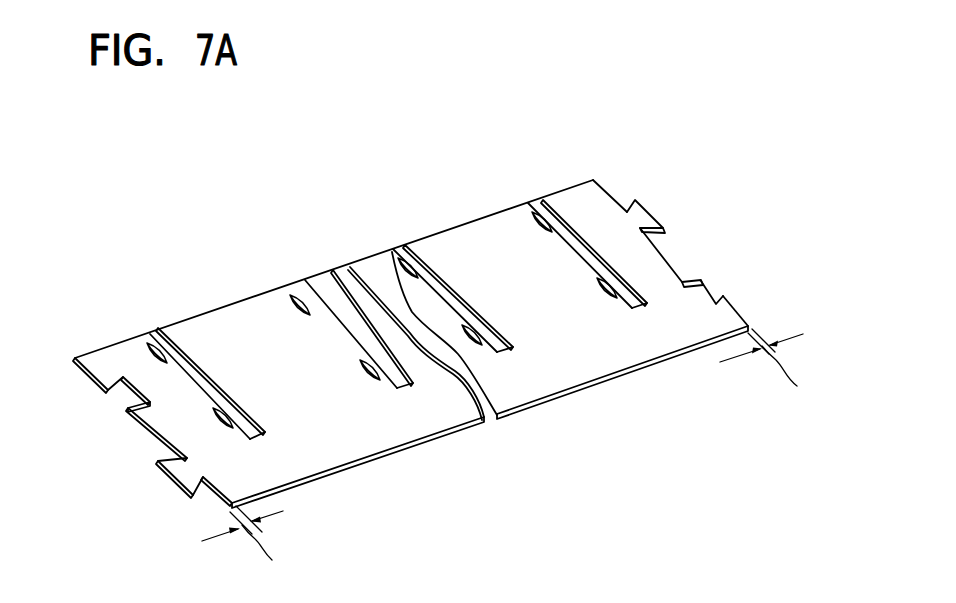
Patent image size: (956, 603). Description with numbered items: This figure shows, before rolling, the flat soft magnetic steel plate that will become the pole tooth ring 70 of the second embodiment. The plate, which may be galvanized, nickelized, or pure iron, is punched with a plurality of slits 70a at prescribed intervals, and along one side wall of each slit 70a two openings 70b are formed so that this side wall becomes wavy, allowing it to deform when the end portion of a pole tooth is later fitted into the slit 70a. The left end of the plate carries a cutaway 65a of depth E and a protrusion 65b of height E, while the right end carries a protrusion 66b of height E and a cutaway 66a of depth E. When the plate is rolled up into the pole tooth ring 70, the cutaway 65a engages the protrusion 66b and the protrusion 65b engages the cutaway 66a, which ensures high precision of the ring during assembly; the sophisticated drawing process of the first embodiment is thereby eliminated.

The pole tooth ring 70 is at (358, 172).
The slit 70a is at (157, 338).
The opening 70b is at (147, 346).
The cutaway 65a is at (124, 394).
The protrusion 65b is at (174, 477).
The cutaway 66a is at (707, 296).
The protrusion 66b is at (637, 216).